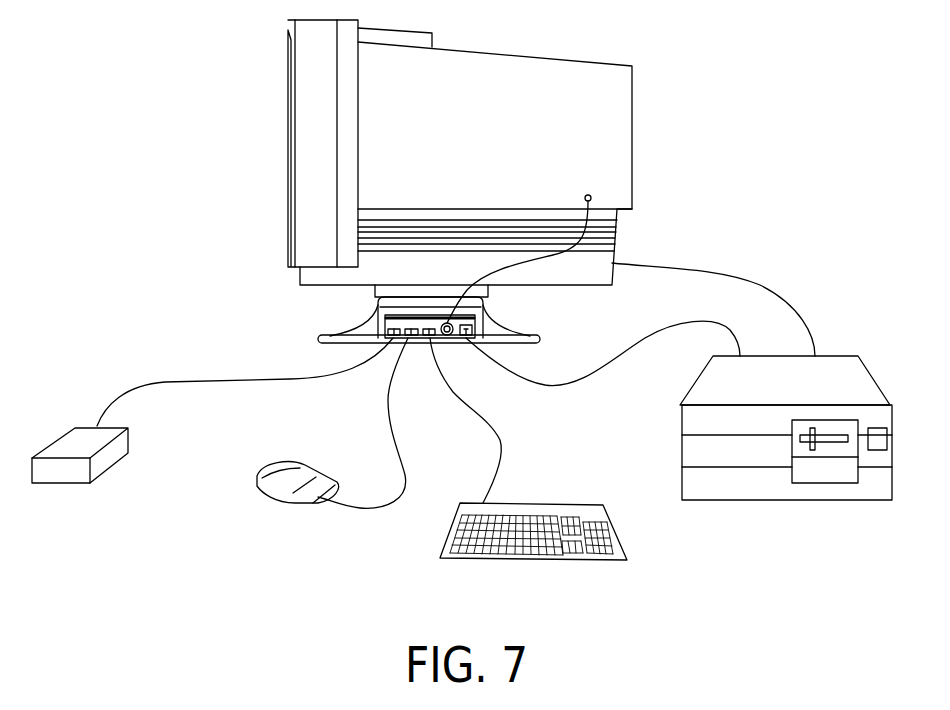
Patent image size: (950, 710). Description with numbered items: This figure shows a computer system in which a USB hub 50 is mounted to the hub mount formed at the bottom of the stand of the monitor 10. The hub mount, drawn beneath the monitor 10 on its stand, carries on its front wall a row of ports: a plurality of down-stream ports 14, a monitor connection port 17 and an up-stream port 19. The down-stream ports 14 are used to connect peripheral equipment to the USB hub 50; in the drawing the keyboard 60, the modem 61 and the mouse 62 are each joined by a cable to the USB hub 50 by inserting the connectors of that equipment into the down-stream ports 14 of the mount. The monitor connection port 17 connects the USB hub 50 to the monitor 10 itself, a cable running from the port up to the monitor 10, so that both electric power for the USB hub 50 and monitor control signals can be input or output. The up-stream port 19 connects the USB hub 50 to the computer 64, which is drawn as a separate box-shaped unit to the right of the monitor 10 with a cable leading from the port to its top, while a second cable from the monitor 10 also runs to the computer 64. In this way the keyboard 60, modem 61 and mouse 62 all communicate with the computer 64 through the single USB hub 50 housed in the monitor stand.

The monitor 10 is at (508, 63).
The up-stream port 19 is at (470, 325).
The USB hub 50 is at (385, 321).
The down-stream ports 14 is at (414, 338).
The monitor connection port 17 is at (447, 338).
The modem 61 is at (73, 476).
The mouse 62 is at (280, 490).
The keyboard 60 is at (530, 556).
The computer 64 is at (780, 490).